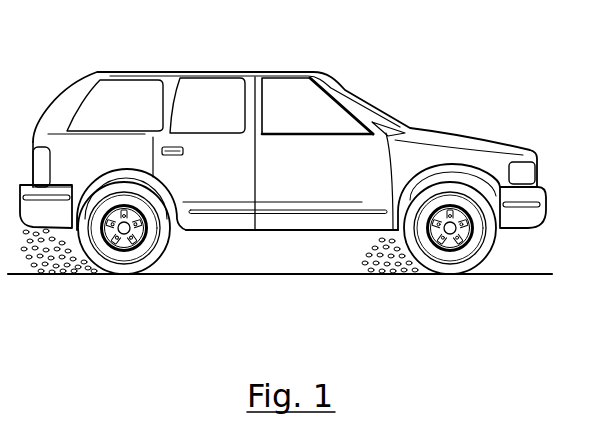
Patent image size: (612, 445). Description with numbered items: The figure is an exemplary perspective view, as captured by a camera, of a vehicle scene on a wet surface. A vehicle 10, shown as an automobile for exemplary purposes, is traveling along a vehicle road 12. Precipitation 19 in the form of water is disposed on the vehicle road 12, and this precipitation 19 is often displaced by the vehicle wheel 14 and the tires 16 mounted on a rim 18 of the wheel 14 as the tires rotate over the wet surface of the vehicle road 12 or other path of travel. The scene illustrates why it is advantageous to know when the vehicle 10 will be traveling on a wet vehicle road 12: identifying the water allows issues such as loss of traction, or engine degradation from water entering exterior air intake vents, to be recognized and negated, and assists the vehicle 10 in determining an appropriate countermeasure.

The vehicle 10 is at (365, 97).
The vehicle road 12 is at (170, 275).
The vehicle wheel 14 is at (450, 272).
The tires 16 is at (478, 253).
The rim 18 is at (470, 227).
The precipitation 19 is at (400, 279).